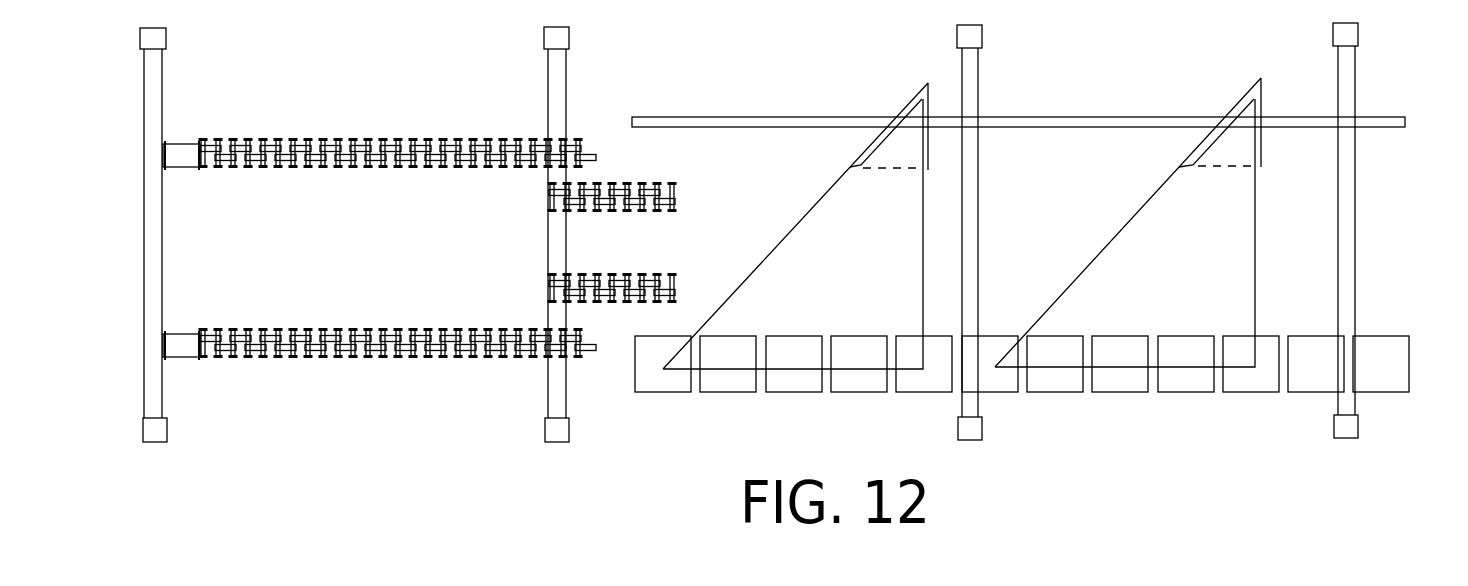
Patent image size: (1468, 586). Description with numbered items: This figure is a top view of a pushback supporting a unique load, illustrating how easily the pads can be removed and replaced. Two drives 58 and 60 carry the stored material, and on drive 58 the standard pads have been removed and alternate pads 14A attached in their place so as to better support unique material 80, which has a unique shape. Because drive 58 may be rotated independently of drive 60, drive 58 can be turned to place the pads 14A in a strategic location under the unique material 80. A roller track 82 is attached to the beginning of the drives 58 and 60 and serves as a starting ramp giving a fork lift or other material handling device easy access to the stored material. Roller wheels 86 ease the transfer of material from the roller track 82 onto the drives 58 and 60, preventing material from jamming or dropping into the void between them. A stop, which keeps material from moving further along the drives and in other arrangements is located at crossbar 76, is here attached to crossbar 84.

The pads 14A is at (893, 101).
The drive 58 is at (762, 117).
The drive 60 is at (820, 398).
The crossbar 76 is at (549, 232).
The unique material 80 is at (821, 255).
The roller track 82 is at (390, 326).
The crossbar 84 is at (163, 222).
The roller wheels 86 is at (593, 268).